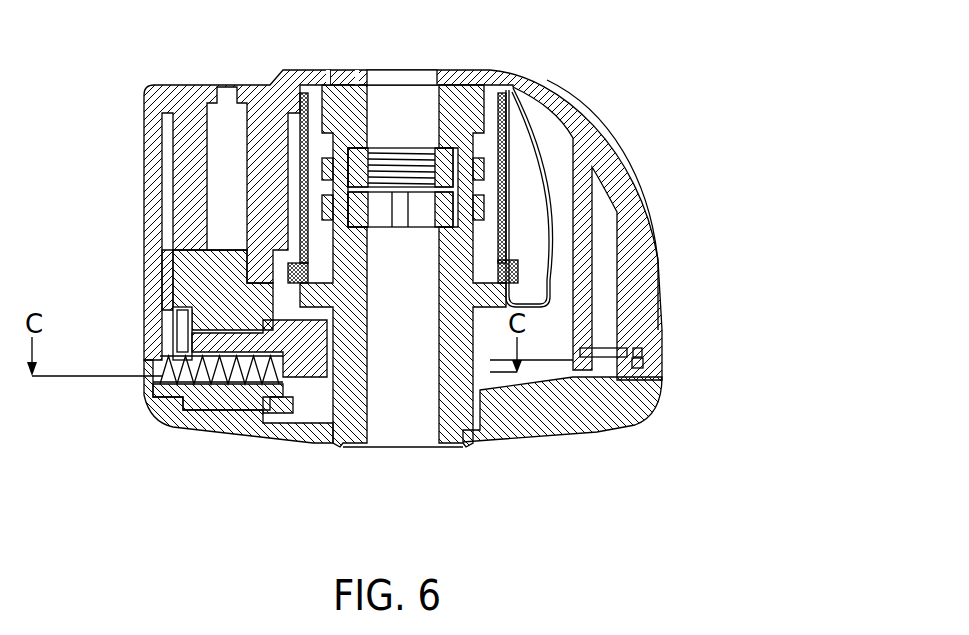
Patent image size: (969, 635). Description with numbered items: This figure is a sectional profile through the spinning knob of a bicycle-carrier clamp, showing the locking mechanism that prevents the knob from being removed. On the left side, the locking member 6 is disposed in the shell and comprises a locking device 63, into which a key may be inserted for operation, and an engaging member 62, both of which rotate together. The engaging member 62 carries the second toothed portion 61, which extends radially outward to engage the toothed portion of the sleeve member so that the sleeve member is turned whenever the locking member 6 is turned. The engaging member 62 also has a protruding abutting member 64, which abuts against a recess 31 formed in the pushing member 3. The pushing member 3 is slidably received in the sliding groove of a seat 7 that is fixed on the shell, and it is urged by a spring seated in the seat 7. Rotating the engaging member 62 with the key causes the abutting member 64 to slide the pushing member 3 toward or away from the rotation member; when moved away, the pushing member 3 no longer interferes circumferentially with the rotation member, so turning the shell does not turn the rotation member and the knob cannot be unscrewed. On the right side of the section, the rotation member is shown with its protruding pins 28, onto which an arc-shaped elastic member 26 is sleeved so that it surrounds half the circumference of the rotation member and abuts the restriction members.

The pushing member 3 is at (317, 387).
The recess 31 is at (283, 400).
The locking member 6 is at (178, 215).
The second toothed portion 61 is at (170, 262).
The engaging member 62 is at (238, 248).
The locking device 63 is at (187, 130).
The abutting member 64 is at (133, 324).
The seat 7 is at (215, 400).
The elastic member 26 is at (537, 83).
The protruding pin 28 is at (477, 167).